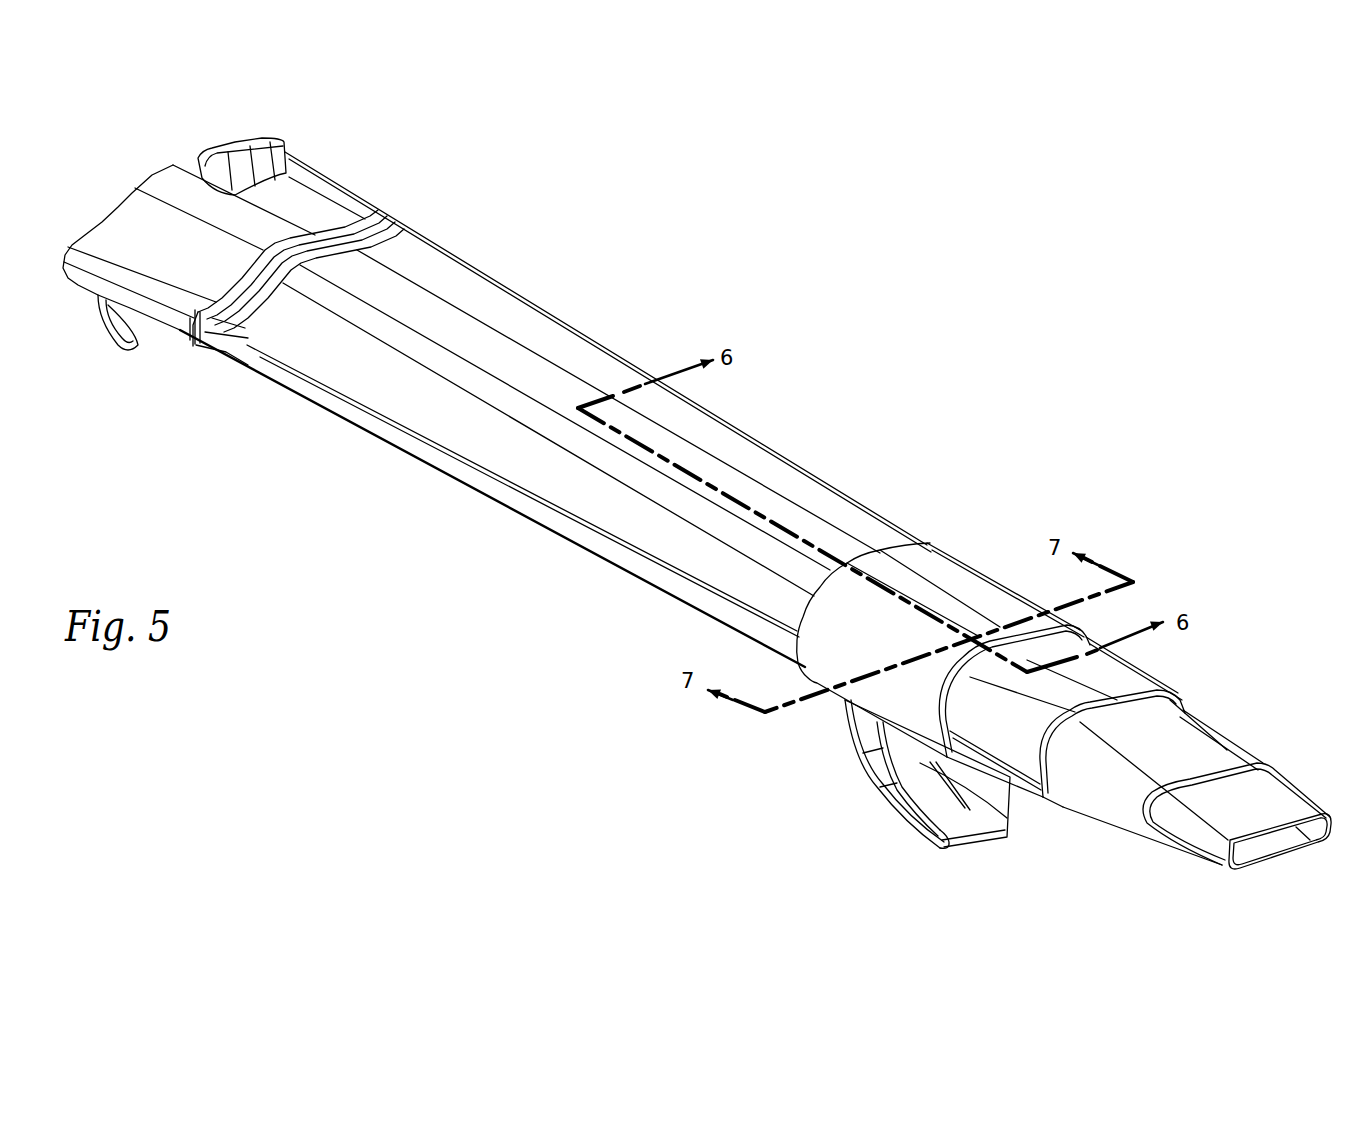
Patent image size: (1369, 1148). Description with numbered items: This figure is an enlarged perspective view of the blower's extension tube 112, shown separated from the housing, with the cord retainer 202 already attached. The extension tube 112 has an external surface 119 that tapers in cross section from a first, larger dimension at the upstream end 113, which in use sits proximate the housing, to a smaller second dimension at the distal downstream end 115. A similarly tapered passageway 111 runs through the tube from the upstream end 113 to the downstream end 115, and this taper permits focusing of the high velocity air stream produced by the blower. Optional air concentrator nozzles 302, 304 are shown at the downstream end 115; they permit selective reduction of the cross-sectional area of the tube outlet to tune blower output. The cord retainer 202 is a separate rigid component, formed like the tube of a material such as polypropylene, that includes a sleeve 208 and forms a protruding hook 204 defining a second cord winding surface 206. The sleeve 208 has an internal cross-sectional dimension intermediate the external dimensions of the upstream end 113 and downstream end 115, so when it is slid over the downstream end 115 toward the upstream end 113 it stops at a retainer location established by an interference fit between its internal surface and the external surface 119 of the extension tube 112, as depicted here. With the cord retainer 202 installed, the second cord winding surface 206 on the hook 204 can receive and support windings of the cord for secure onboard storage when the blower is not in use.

The passageway 111 is at (1266, 862).
The extension tube 112 is at (748, 436).
The upstream end 113 is at (387, 257).
The downstream end 115 is at (1092, 632).
The external surface 119 is at (574, 357).
The cord retainer 202 is at (793, 596).
The protruding hook 204 is at (913, 822).
The second cord winding surface 206 is at (985, 838).
The sleeve 208 is at (932, 566).
The air concentrator nozzle 302 is at (1210, 724).
The air concentrator nozzle 304 is at (1280, 778).